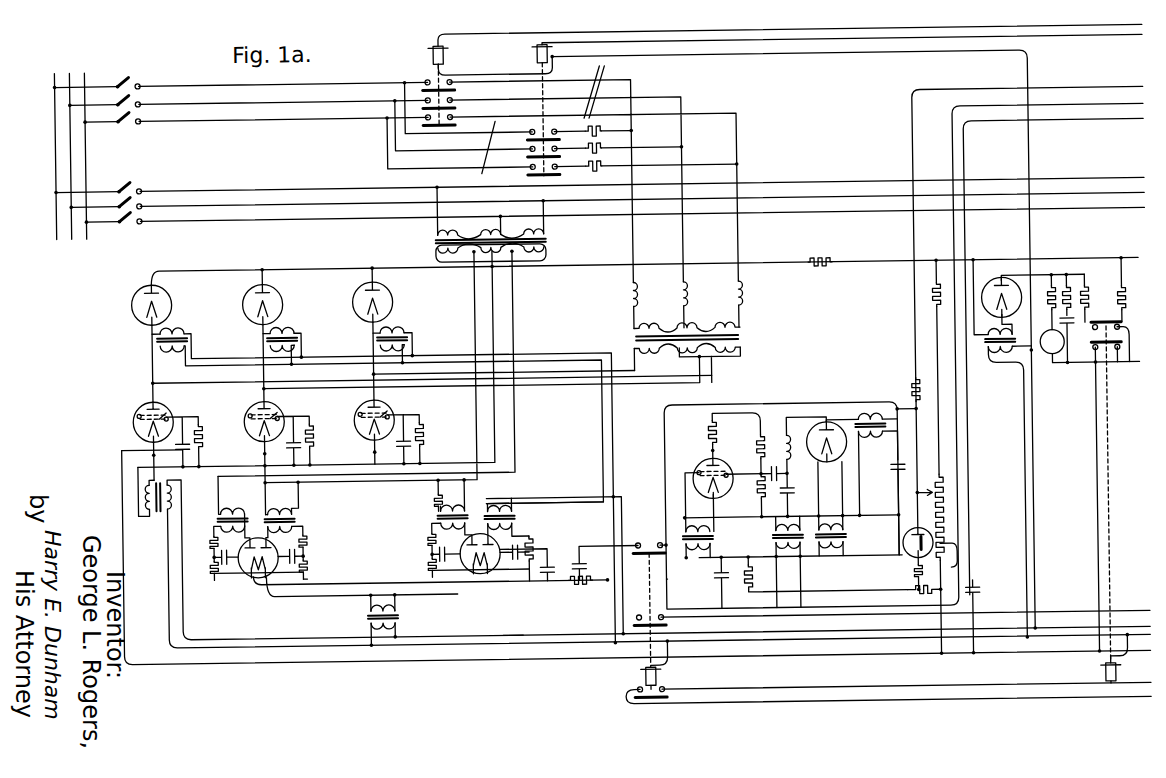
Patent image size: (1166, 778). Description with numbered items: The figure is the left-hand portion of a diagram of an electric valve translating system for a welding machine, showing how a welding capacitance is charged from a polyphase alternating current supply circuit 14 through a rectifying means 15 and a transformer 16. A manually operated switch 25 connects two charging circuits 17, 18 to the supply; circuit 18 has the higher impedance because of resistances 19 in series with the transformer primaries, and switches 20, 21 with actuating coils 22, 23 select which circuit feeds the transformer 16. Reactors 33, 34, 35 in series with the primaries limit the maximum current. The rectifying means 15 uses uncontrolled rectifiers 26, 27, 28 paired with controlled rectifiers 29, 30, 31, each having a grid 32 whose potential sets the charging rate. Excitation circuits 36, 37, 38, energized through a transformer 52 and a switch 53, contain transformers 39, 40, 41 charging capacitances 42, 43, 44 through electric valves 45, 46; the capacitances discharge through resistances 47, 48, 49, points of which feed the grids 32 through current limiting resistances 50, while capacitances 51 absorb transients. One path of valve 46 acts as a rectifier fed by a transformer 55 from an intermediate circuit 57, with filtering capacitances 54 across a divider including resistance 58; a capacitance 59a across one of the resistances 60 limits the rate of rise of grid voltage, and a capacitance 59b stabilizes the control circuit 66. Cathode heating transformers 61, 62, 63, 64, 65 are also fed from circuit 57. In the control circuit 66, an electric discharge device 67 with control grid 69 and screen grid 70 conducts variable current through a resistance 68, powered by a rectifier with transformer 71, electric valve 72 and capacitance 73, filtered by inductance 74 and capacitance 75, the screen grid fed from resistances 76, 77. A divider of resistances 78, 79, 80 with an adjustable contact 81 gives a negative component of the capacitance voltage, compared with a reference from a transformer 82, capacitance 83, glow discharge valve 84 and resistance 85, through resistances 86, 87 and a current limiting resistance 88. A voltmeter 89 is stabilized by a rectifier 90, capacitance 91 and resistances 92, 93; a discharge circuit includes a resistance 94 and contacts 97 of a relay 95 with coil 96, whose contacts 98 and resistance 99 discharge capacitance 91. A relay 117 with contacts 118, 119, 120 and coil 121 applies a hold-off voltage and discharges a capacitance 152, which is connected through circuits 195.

The alternating current supply circuit 14 is at (89, 156).
The rectifying means 15 is at (273, 258).
The transformer 16 is at (739, 341).
The charging circuit 17 is at (596, 84).
The charging circuit 18 is at (489, 140).
The resistances 19 is at (589, 165).
The switch 20 is at (428, 77).
The switch 21 is at (549, 97).
The actuating coil 22 is at (436, 51).
The actuating coil 23 is at (540, 53).
The manually operated switch 25 is at (131, 75).
The rectifier 26 is at (134, 296).
The rectifier 27 is at (245, 295).
The rectifier 28 is at (356, 292).
The rectifier 29 is at (134, 405).
The rectifier 30 is at (245, 405).
The rectifier 31 is at (356, 405).
The grid 32 is at (167, 408).
The reactor 33 is at (632, 292).
The reactor 34 is at (682, 291).
The reactor 35 is at (737, 290).
The excitation circuit 36 is at (222, 601).
The excitation circuit 37 is at (324, 585).
The excitation circuit 38 is at (415, 583).
The transformer 39 is at (235, 512).
The transformer 40 is at (285, 513).
The transformer 41 is at (460, 512).
The capacitance 42 is at (210, 556).
The capacitance 43 is at (305, 551).
The capacitance 44 is at (437, 551).
The electric valve 45 is at (250, 578).
The electric valve 46 is at (492, 576).
The resistance 47 is at (211, 530).
The resistance 48 is at (306, 536).
The resistance 49 is at (436, 506).
The current limiting resistance 50 is at (201, 426).
The capacitance 51 is at (176, 446).
The transformer 52 is at (549, 244).
The switch 53 is at (131, 180).
The filtering capacitance 54 is at (547, 548).
The transformer 55 is at (511, 517).
The intermediate circuit 57 is at (508, 634).
The resistance 58 is at (531, 546).
The capacitance 59a is at (596, 562).
The capacitance 59b is at (721, 583).
The resistances 60 is at (576, 584).
The cathode heating transformer 61 is at (177, 330).
The cathode heating transformer 62 is at (288, 330).
The cathode heating transformer 63 is at (398, 331).
The cathode heating transformer 64 is at (156, 509).
The cathode heating transformer 65 is at (395, 615).
The control circuit 66 is at (805, 396).
The electric discharge device 67 is at (699, 468).
The resistance 68 is at (708, 430).
The control grid 69 is at (718, 496).
The screen grid 70 is at (697, 515).
The transformer 71 is at (773, 538).
The electric valve 72 is at (827, 489).
The capacitance 73 is at (794, 495).
The inductance 74 is at (786, 436).
The capacitance 75 is at (769, 472).
The resistance 76 is at (759, 499).
The resistance 77 is at (757, 448).
The resistance 78 is at (935, 292).
The resistance 79 is at (947, 509).
The resistance 80 is at (940, 540).
The adjustable contact 81 is at (929, 493).
The transformer 82 is at (880, 437).
The capacitance 83 is at (896, 475).
The glow discharge valve 84 is at (901, 556).
The resistance 85 is at (918, 403).
The resistance 86 is at (910, 578).
The resistance 87 is at (923, 588).
The current limiting resistance 88 is at (750, 580).
The voltmeter 89 is at (1049, 360).
The rectifier 90 is at (998, 288).
The capacitance 91 is at (1073, 341).
The resistance 92 is at (1073, 296).
The resistance 93 is at (1050, 302).
The resistance 94 is at (1127, 294).
The relay 95 is at (1108, 490).
The actuating coil 96 is at (1100, 673).
The contacts 97 is at (1114, 359).
The contacts 98 is at (1094, 354).
The resistance 99 is at (1089, 301).
The relay 117 is at (648, 597).
The contacts 118 is at (641, 536).
The contacts 119 is at (635, 613).
The contacts 120 is at (636, 687).
The actuating coil 121 is at (653, 677).
The capacitance 152 is at (973, 592).
The circuits 195 is at (1090, 122).